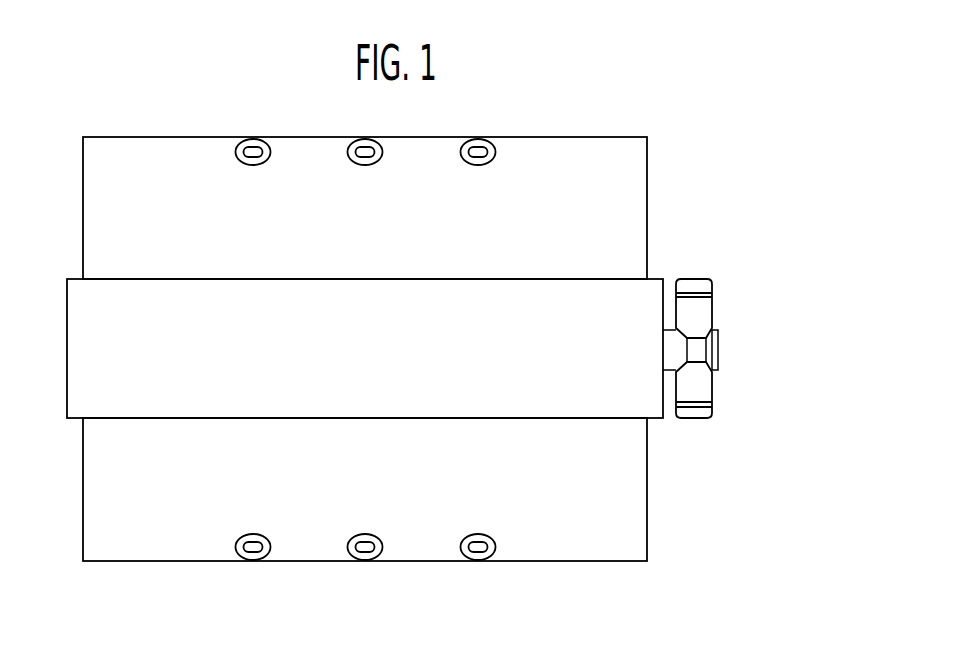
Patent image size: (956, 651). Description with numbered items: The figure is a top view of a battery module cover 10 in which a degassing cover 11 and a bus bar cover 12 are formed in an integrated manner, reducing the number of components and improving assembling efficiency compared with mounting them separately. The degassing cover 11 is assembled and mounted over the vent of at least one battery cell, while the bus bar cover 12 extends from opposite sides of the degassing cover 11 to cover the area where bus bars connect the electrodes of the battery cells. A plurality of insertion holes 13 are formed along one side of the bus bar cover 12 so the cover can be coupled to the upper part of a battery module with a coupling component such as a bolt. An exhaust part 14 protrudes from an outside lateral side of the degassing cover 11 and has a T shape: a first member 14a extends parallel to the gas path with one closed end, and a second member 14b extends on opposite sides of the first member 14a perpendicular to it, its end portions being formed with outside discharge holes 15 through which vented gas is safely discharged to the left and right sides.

The battery module cover 10 is at (713, 157).
The degassing cover 11 is at (627, 386).
The bus bar cover 12 is at (617, 206).
The insertion hole 13 is at (478, 152).
The exhaust part 14 is at (731, 358).
The first member 14a is at (703, 350).
The second member 14b is at (703, 317).
The outside discharge hole 15 is at (692, 419).